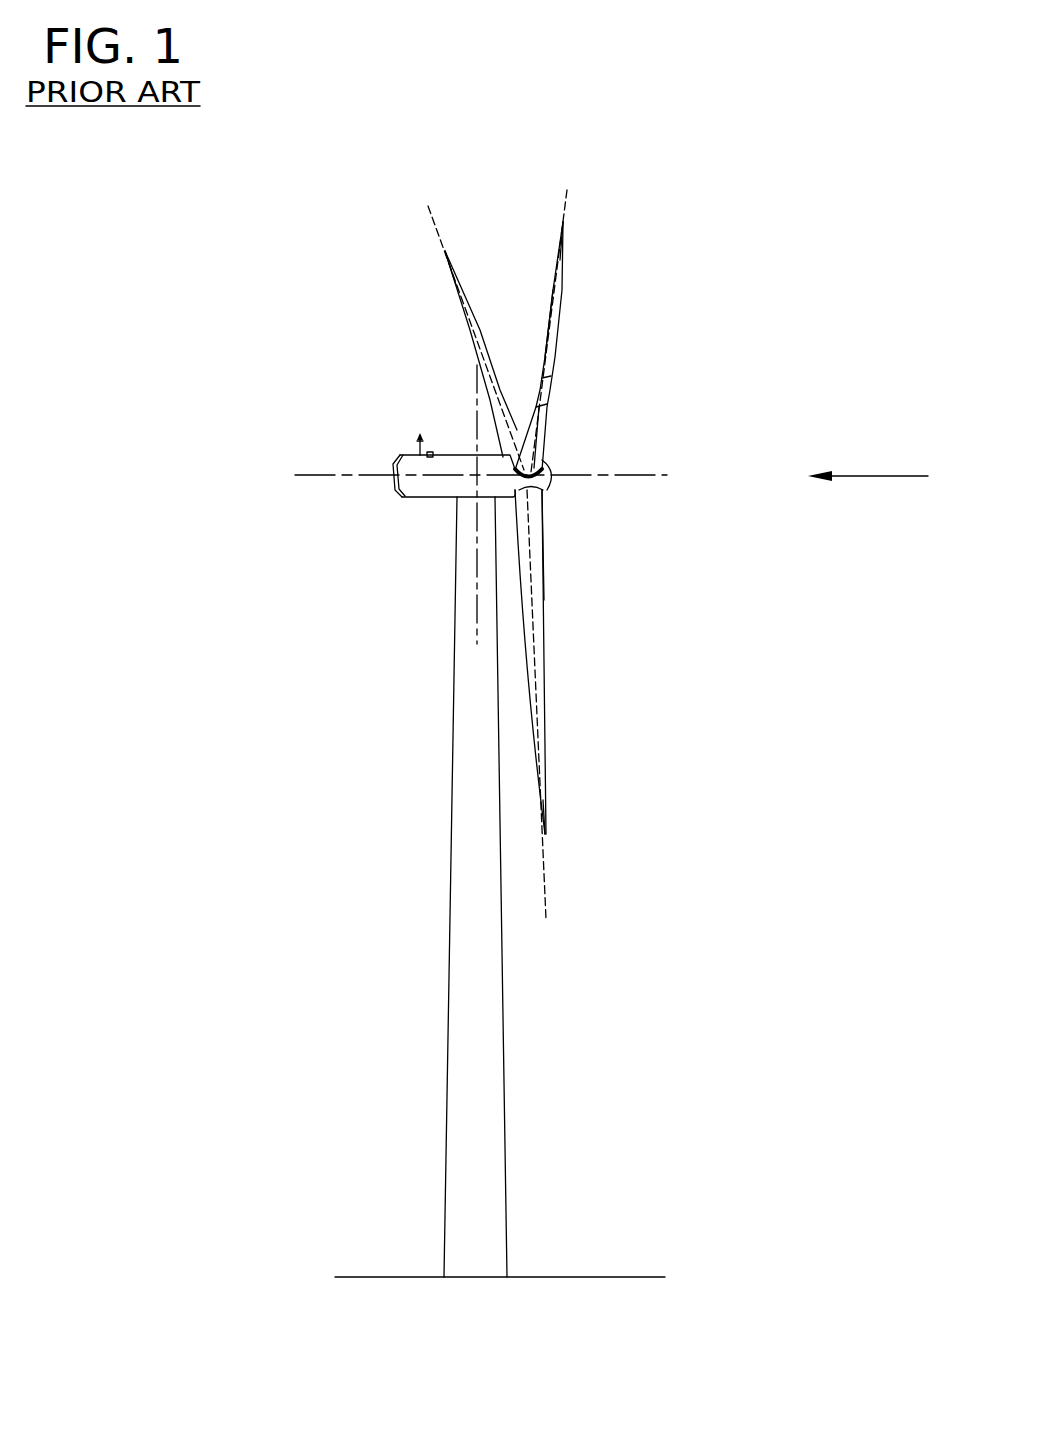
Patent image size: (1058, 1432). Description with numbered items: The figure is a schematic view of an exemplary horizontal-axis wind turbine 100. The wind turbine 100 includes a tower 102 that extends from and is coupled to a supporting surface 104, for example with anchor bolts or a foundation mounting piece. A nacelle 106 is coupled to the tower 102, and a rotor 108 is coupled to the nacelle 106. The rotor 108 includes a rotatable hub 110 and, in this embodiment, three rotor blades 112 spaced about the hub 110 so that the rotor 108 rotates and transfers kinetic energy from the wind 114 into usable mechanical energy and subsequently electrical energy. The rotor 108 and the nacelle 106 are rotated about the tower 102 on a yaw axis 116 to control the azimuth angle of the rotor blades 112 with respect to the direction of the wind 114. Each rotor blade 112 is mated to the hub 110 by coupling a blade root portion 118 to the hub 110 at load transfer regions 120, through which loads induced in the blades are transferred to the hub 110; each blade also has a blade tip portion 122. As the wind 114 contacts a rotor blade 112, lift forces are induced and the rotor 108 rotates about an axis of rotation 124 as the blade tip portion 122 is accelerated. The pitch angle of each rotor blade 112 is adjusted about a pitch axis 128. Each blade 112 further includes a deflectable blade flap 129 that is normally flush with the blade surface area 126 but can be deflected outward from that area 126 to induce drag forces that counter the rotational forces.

The wind turbine 100 is at (208, 258).
The tower 102 is at (447, 1045).
The supporting surface 104 is at (399, 1277).
The nacelle 106 is at (423, 497).
The rotor 108 is at (572, 370).
The rotatable hub 110 is at (548, 471).
The rotor blades 112 is at (478, 348).
The wind 114 is at (887, 472).
The yaw axis 116 is at (477, 401).
The blade root portion 118 is at (538, 553).
The load transfer regions 120 is at (543, 430).
The blade tip portion 122 is at (448, 262).
The axis of rotation 124 is at (623, 477).
The blade surface area 126 is at (551, 405).
The pitch axis 128 is at (428, 209).
The blade flap 129 is at (557, 357).